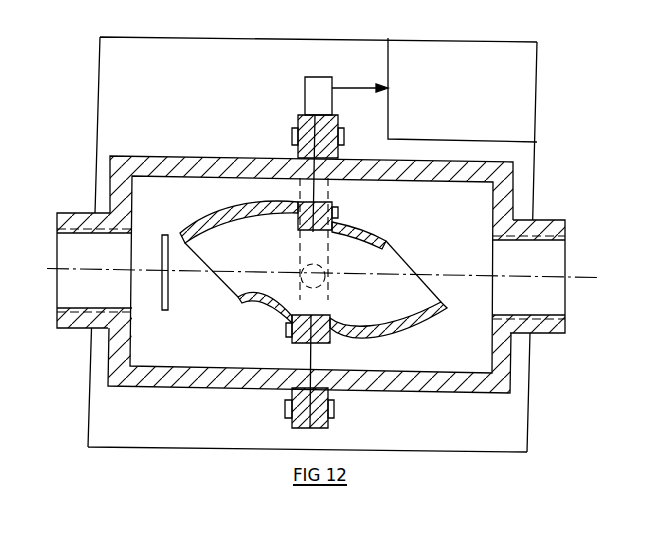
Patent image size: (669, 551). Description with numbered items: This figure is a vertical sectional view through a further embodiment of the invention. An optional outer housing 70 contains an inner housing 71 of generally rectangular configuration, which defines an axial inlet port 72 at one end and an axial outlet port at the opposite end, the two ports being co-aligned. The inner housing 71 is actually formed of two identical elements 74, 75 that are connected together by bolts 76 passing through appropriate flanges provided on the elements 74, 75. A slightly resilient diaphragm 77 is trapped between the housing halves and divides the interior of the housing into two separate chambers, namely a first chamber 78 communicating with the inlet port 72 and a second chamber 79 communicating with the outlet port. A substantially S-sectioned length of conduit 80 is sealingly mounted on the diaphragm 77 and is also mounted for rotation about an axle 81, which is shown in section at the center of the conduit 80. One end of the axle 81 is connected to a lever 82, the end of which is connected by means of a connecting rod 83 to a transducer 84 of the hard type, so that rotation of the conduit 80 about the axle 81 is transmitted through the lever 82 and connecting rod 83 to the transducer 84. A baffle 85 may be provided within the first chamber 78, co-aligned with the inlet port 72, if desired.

The outer housing 70 is at (232, 35).
The inner housing 71 is at (213, 156).
The axial inlet port 72 is at (84, 228).
The housing element 74 is at (222, 386).
The housing element 75 is at (446, 393).
The bolt 76 is at (334, 417).
The diaphragm 77 is at (310, 358).
The first chamber 78 is at (211, 292).
The second chamber 79 is at (426, 296).
The S-sectioned length of conduit 80 is at (342, 241).
The axle 81 is at (305, 289).
The lever 82 is at (316, 87).
The connecting rod 83 is at (351, 87).
The transducer 84 is at (415, 56).
The baffle 85 is at (168, 296).